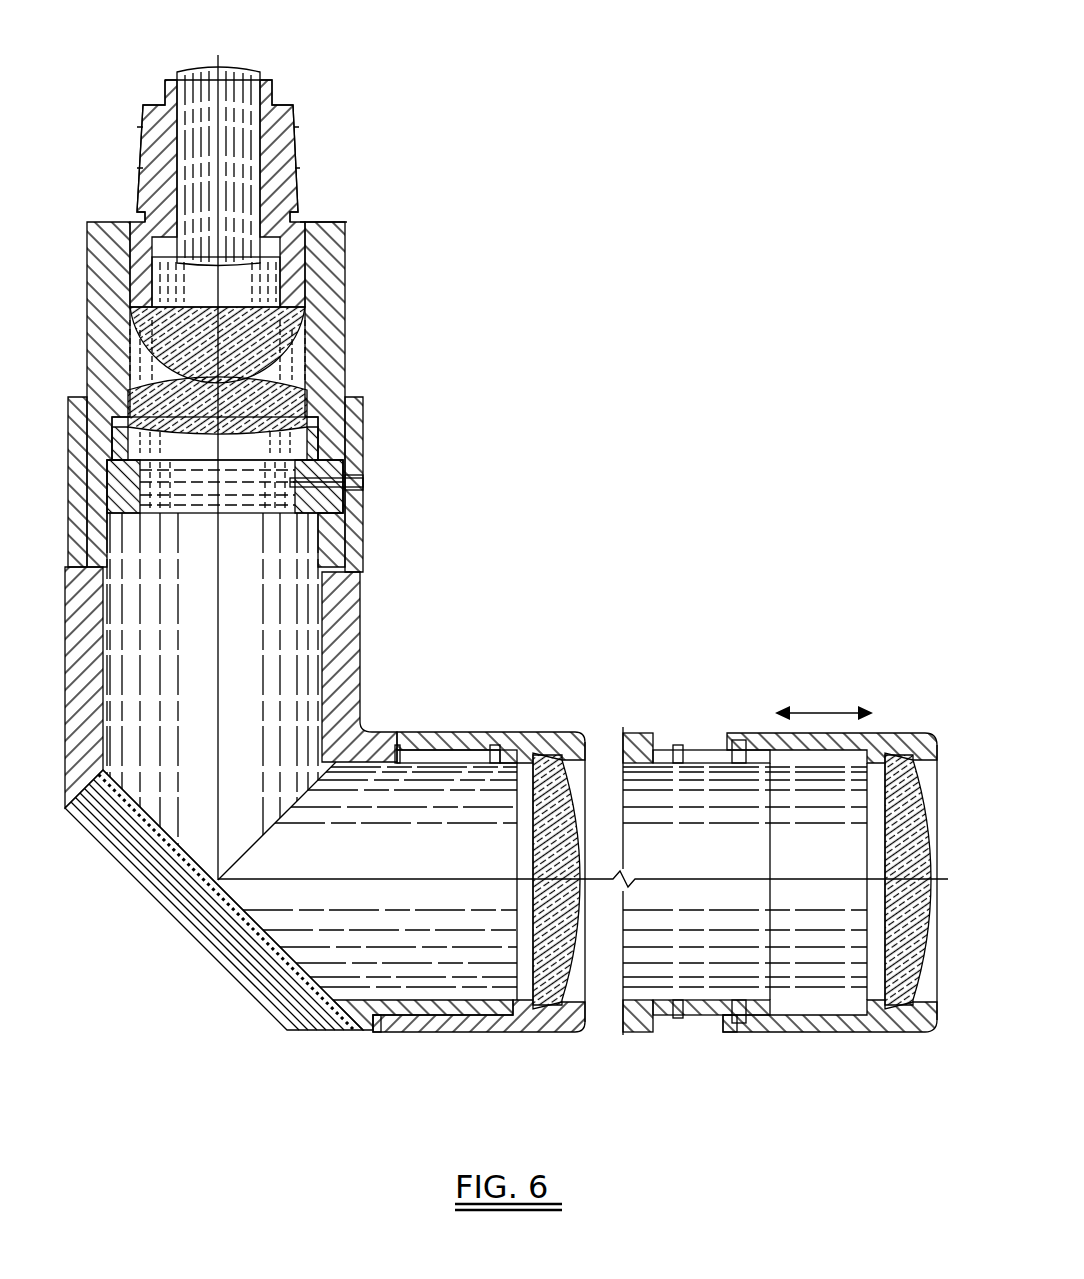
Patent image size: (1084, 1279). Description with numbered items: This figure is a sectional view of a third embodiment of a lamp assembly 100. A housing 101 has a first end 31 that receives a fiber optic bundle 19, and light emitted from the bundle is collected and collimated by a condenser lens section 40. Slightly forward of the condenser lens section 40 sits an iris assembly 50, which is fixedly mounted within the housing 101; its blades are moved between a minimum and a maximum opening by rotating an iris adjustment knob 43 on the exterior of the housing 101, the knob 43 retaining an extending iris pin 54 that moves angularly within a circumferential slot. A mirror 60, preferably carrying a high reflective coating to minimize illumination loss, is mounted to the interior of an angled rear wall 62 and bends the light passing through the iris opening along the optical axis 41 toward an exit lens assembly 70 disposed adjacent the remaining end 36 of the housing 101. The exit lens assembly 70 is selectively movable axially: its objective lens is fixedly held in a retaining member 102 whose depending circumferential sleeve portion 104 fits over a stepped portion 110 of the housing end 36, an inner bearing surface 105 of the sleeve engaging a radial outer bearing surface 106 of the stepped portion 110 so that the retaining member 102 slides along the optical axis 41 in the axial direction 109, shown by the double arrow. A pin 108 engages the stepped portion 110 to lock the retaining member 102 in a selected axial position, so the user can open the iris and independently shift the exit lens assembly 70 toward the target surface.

The lamp assembly 100 is at (140, 74).
The fiber optic bundle 19 is at (224, 100).
The first end 31 is at (348, 237).
The housing 101 is at (347, 275).
The condenser lens section 40 is at (262, 366).
The iris adjustment knob 43 is at (380, 390).
The iris pin 54 is at (372, 481).
The iris assembly 50 is at (330, 515).
The remaining end 36 is at (460, 850).
The mirror 60 is at (150, 893).
The angled rear wall 62 is at (212, 950).
The exit lens assembly 70 is at (593, 790).
The optical axis 41 is at (590, 1000).
The retaining member 102 is at (550, 1032).
The circumferential sleeve portion 104 is at (417, 1017).
The inner bearing surface 105 is at (373, 1018).
The stepped portion 110 is at (398, 748).
The radial outer bearing surface 106 is at (668, 1032).
The pin 108 is at (750, 747).
The axial direction 109 is at (833, 710).